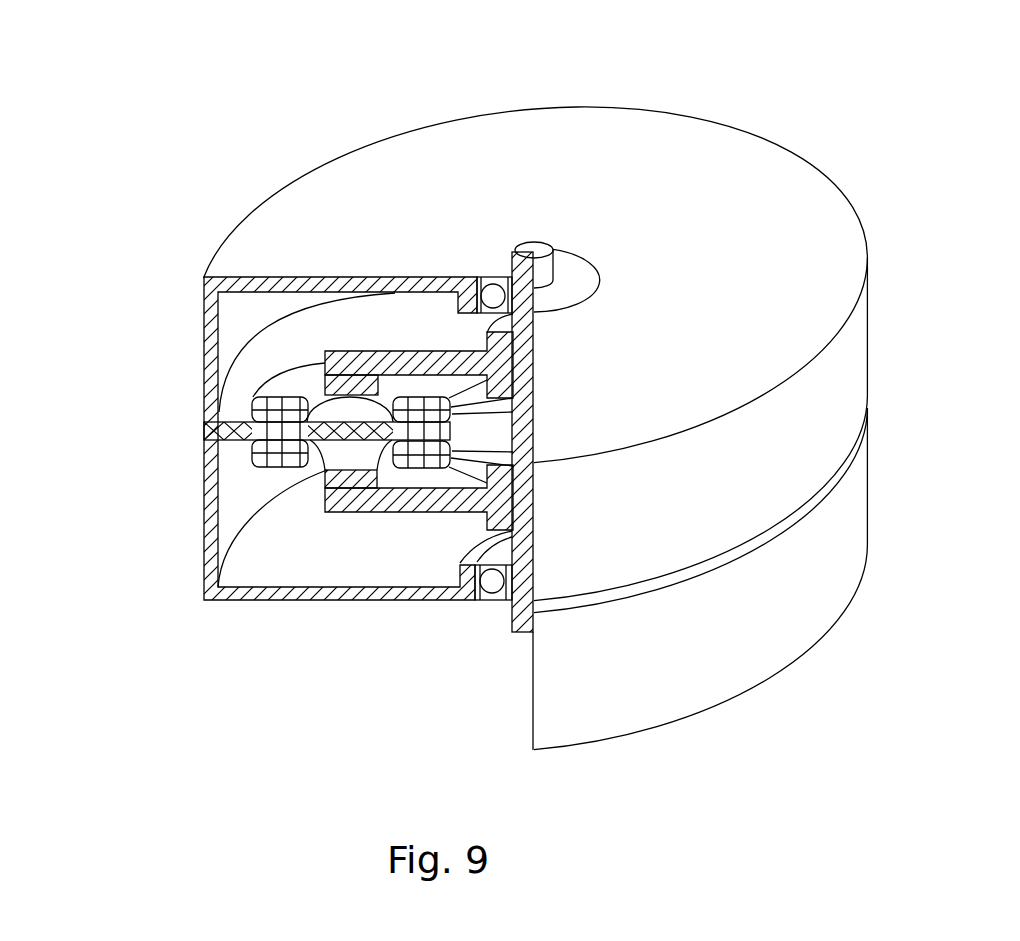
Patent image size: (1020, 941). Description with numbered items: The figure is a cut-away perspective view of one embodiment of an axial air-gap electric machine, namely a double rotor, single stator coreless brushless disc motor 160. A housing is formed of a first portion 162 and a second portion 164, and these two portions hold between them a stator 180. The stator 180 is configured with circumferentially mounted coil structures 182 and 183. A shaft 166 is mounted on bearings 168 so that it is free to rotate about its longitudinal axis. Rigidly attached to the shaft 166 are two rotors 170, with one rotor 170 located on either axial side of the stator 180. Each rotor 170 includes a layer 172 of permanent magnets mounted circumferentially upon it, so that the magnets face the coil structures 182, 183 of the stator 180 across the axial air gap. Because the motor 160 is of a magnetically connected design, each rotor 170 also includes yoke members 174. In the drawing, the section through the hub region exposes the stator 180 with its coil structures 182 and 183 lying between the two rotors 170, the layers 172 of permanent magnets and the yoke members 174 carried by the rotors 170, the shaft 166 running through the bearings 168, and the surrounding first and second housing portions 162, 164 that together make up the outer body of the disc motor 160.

The coreless brushless disc motor 160 is at (790, 133).
The first portion of the housing 162 is at (753, 483).
The second portion of the housing 164 is at (759, 632).
The shaft 166 is at (543, 246).
The bearings 168 is at (492, 293).
The rotor 170 is at (431, 343).
The layer of permanent magnets 172 is at (322, 363).
The yoke members 174 is at (325, 354).
The stator 180 is at (243, 440).
The coil structure 182 is at (318, 393).
The coil structure 183 is at (278, 467).